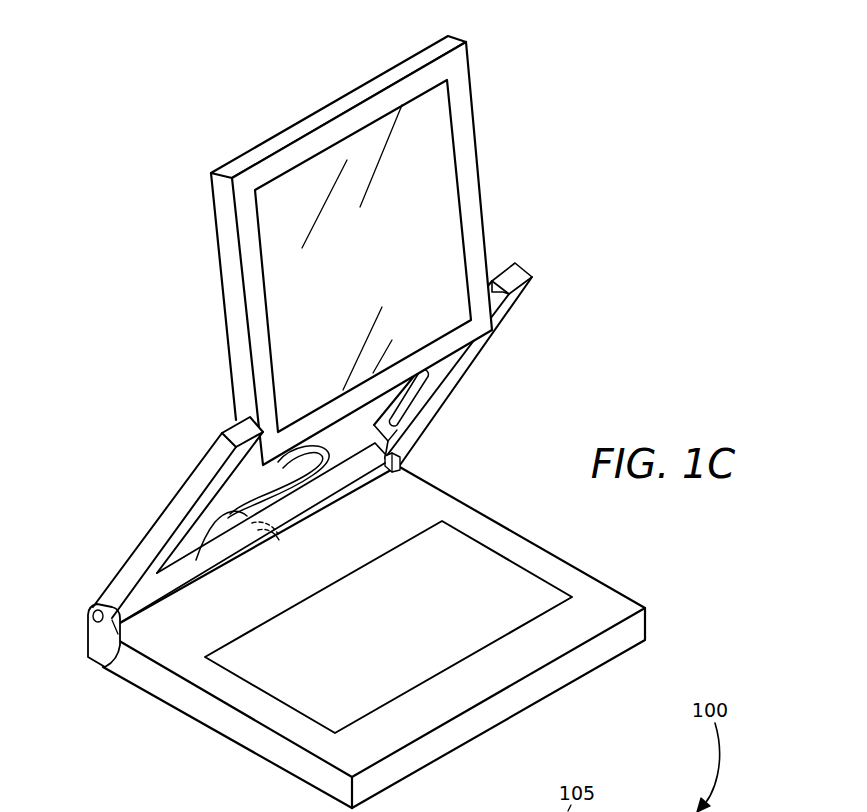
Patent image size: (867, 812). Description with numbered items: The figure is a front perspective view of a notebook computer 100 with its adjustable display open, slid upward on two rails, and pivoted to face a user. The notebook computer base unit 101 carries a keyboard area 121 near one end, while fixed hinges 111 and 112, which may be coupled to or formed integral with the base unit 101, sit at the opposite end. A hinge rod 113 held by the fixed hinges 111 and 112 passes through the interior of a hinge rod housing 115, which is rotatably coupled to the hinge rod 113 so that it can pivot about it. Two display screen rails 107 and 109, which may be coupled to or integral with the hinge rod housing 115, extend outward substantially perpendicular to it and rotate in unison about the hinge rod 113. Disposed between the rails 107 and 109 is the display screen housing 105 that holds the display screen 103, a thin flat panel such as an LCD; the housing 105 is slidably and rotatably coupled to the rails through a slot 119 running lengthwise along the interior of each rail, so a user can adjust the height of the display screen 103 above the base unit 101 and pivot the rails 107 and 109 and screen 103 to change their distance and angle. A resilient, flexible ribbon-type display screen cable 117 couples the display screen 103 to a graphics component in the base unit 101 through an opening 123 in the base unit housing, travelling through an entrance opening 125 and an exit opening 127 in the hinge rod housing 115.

The notebook computer 100 is at (632, 156).
The notebook computer base unit 101 is at (598, 608).
The display screen 103 is at (433, 165).
The display screen housing 105 is at (453, 70).
The display screen rail 107 is at (503, 300).
The display screen rail 109 is at (197, 482).
The fixed hinge 111 is at (403, 461).
The fixed hinge 112 is at (103, 667).
The hinge rod 113 is at (88, 616).
The hinge rod housing 115 is at (350, 470).
The display screen cable 117 is at (337, 420).
The slot 119 is at (433, 393).
The keyboard area 121 is at (492, 572).
The opening 123 is at (283, 537).
The entrance opening 125 is at (285, 518).
The exit opening 127 is at (215, 548).